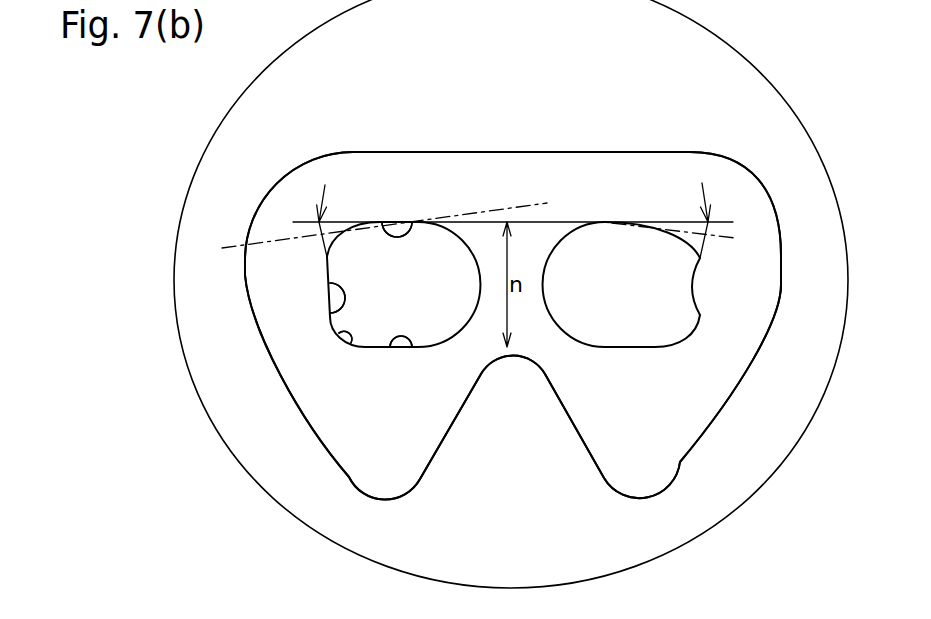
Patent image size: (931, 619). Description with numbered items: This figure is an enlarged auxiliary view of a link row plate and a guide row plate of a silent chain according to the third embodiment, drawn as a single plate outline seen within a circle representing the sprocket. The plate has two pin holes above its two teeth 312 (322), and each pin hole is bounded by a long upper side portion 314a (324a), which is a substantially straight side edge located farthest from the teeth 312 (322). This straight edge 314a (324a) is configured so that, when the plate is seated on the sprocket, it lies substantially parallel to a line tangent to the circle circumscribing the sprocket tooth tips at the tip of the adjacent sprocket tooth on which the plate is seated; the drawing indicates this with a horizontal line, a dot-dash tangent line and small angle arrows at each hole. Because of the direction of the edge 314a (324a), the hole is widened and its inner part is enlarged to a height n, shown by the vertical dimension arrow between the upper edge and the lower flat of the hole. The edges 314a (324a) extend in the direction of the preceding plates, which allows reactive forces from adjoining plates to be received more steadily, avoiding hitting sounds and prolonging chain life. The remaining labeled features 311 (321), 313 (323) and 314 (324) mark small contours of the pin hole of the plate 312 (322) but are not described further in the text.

The small protrusion 311 is at (347, 327).
The small protrusion 321 is at (347, 327).
The teeth 312 is at (378, 467).
The teeth 322 is at (378, 467).
The protrusion 313 is at (327, 313).
The protrusion 323 is at (327, 313).
The protrusion 314 is at (403, 347).
The protrusion 324 is at (403, 347).
The long upper side portion 314a is at (414, 225).
The long upper side portion 324a is at (414, 225).